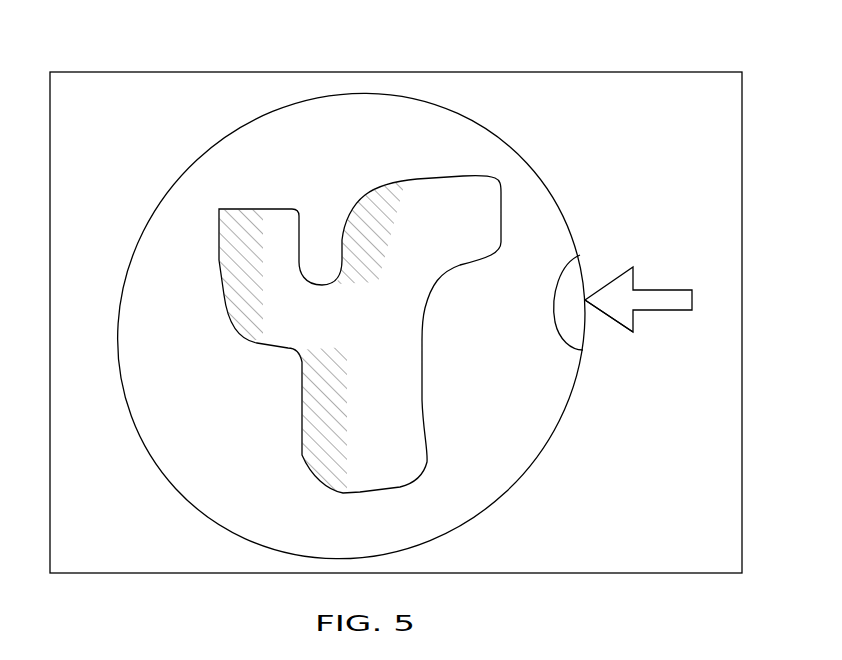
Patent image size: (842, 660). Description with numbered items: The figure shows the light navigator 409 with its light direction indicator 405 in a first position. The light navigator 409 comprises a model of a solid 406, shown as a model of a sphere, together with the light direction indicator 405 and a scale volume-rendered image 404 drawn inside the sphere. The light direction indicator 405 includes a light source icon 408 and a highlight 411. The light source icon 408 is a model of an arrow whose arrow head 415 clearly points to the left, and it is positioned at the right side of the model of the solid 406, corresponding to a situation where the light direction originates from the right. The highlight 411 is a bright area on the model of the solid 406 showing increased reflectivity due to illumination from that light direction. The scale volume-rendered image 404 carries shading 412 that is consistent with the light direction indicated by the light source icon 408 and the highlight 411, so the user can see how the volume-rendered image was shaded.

The scale volume-rendered image 404 is at (270, 223).
The light direction indicator 405 is at (620, 296).
The model of a solid 406 is at (460, 143).
The light source icon 408 is at (663, 293).
The light navigator 409 is at (587, 63).
The highlight 411 is at (564, 330).
The shading 412 is at (377, 203).
The arrow head 415 is at (608, 312).